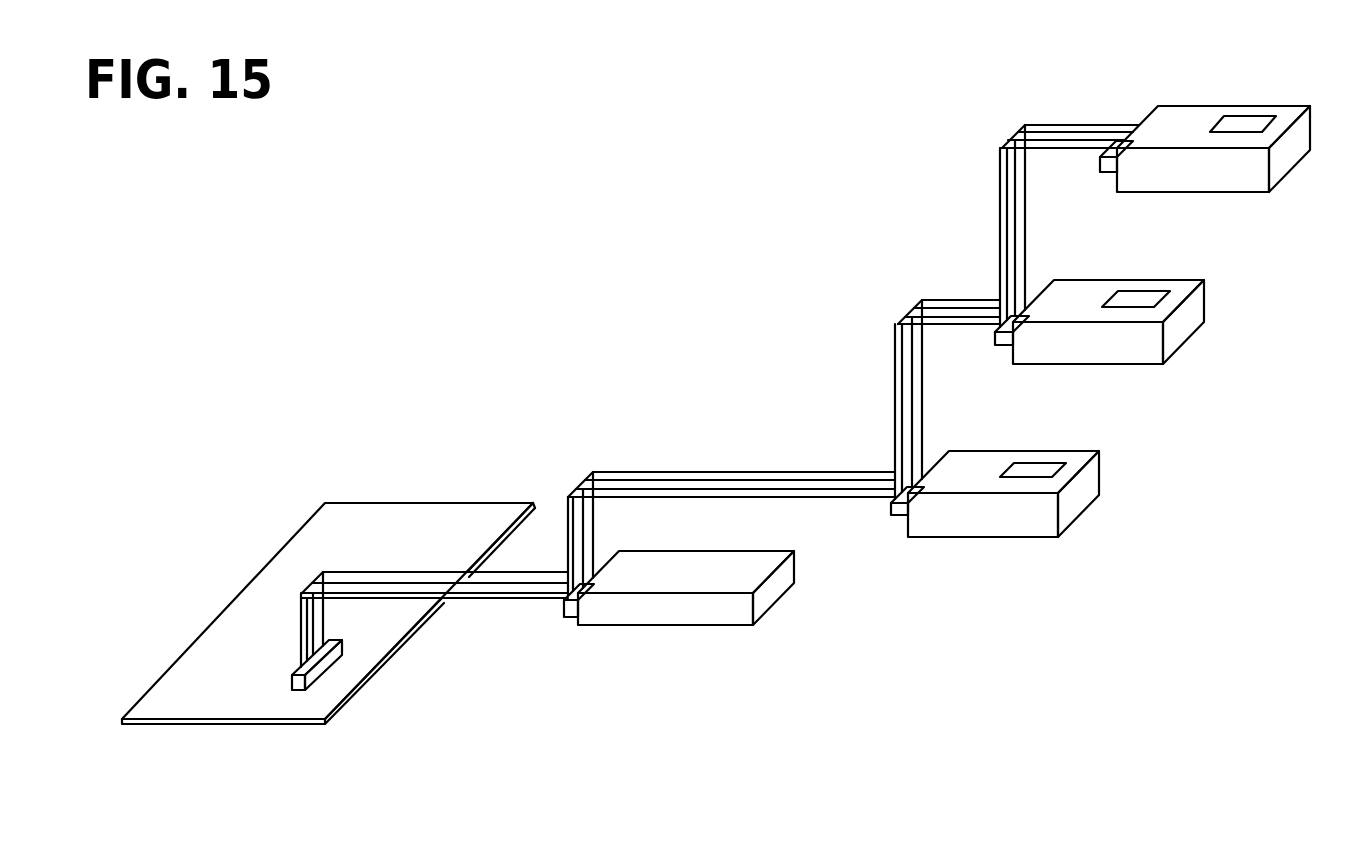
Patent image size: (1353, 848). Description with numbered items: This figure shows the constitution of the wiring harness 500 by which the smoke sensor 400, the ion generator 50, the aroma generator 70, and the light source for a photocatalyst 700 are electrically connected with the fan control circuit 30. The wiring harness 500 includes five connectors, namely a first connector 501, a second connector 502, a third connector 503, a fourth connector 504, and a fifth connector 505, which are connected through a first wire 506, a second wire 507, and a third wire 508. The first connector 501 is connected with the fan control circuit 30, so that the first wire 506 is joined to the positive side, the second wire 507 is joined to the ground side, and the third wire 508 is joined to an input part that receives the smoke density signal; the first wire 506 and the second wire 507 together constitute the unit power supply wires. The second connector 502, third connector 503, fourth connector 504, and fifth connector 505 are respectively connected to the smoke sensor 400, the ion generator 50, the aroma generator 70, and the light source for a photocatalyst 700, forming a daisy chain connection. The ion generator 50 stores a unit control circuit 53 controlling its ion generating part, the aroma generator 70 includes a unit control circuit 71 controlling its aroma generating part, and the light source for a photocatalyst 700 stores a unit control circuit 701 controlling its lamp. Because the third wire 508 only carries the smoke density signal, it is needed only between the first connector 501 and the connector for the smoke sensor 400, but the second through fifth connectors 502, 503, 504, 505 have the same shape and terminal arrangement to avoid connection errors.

The fan control circuit 30 is at (208, 650).
The smoke sensor 400 is at (703, 614).
The wiring harness 500 is at (678, 458).
The first connector 501 is at (297, 692).
The second connector 502 is at (566, 618).
The third connector 503 is at (893, 516).
The fourth connector 504 is at (995, 346).
The fifth connector 505 is at (1102, 173).
The first wire 506 is at (920, 302).
The second wire 507 is at (913, 310).
The third wire 508 is at (907, 318).
The ion generator 50 is at (1043, 528).
The unit control circuit 53 is at (1023, 476).
The aroma generator 70 is at (1137, 350).
The unit control circuit 71 is at (1152, 304).
The light source for a photocatalyst 700 is at (1165, 122).
The unit control circuit 701 is at (1255, 122).